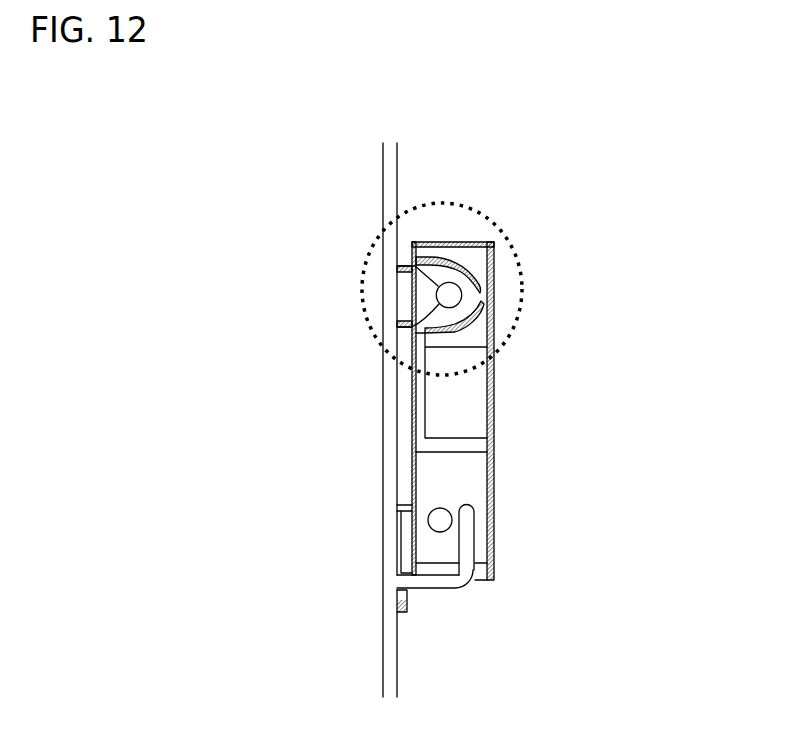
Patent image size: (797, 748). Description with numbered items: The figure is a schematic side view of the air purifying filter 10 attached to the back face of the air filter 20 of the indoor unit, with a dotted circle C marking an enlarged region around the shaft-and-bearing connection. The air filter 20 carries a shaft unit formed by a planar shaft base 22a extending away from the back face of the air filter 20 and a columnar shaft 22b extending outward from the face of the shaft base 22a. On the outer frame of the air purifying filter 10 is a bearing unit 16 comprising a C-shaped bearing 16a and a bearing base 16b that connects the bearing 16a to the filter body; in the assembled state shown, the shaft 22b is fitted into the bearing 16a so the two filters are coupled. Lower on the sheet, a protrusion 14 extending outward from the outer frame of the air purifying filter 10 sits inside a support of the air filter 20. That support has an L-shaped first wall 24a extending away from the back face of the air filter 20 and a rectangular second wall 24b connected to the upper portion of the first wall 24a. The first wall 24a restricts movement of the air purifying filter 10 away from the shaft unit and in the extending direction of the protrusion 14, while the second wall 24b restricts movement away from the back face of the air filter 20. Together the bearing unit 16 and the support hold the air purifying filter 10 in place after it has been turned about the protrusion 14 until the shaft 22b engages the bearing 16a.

The air purifying filter 10 is at (453, 423).
The protrusion 14 is at (450, 523).
The bearing unit 16 is at (564, 284).
The bearing 16a is at (470, 276).
The bearing base 16b is at (480, 299).
The air filter 20 is at (393, 182).
The shaft base 22a is at (405, 292).
The shaft 22b is at (450, 293).
The first wall 24a is at (443, 580).
The second wall 24b is at (465, 523).
The enlarged region circle C is at (500, 225).